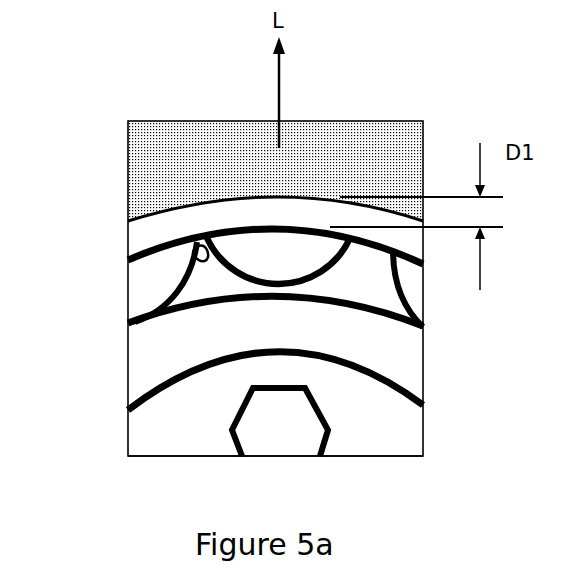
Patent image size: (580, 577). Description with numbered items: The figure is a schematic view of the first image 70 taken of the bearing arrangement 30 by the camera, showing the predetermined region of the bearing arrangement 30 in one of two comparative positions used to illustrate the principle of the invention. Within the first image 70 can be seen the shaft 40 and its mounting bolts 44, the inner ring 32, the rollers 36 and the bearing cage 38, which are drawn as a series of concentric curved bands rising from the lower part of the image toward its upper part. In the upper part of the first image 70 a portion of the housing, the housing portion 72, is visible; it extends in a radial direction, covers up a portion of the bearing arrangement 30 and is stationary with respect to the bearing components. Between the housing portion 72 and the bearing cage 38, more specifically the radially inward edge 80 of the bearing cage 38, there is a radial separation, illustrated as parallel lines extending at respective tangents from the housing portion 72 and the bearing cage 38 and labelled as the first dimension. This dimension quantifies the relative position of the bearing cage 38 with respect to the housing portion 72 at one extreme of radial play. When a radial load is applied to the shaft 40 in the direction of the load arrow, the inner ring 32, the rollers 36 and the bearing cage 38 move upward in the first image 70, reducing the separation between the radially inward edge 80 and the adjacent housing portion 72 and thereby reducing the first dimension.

The bearing arrangement 30 is at (450, 336).
The inner ring 32 is at (145, 373).
The rollers 36 is at (137, 293).
The bearing cage 38 is at (137, 252).
The shaft 40 is at (155, 445).
The mounting bolts 44 is at (275, 438).
The first image 70 is at (436, 424).
The housing portion 72 is at (350, 130).
The radially inward edge 80 is at (195, 255).